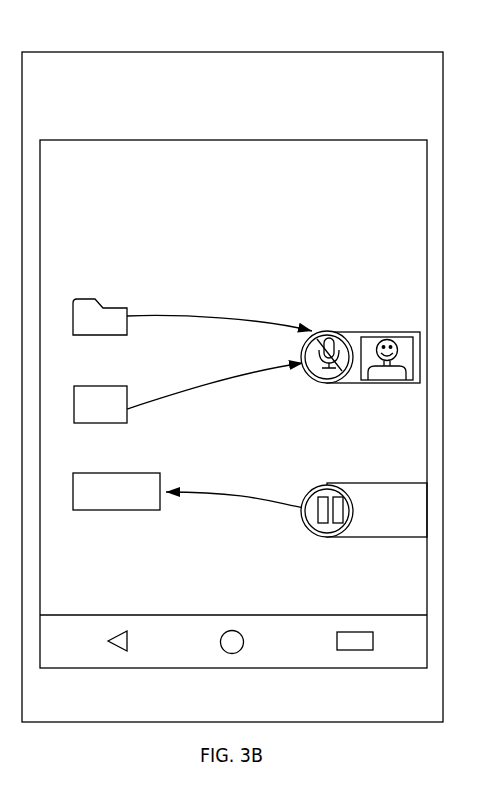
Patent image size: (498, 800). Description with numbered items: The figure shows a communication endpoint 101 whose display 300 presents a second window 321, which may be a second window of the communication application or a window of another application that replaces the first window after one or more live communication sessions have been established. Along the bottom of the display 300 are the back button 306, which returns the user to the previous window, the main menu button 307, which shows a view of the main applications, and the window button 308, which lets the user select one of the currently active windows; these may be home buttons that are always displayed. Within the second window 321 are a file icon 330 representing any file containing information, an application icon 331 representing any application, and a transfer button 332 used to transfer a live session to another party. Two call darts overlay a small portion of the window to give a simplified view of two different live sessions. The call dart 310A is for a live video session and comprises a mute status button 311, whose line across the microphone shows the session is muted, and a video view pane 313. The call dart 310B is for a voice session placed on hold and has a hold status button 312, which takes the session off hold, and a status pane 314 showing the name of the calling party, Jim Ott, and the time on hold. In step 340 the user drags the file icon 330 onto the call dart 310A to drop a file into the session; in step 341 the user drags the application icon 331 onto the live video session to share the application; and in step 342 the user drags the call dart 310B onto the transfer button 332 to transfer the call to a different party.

The communication endpoint 101 is at (232, 52).
The display 300 is at (232, 140).
The second window 321 is at (100, 153).
The file icon 330 is at (112, 307).
The application icon 331 is at (107, 386).
The transfer button 332 is at (130, 473).
The step of dragging the file icon onto the call dart 340 is at (197, 313).
The step of dragging the application icon onto the live session 341 is at (195, 372).
The step of dragging the call dart onto the transfer button 342 is at (233, 492).
The call dart 310A is at (351, 353).
The mute status button 311 is at (345, 376).
The video view pane 313 is at (412, 378).
The call dart 310B is at (348, 507).
The hold status button 312 is at (332, 526).
The status pane 314 is at (393, 528).
The back button 306 is at (117, 630).
The main menu button 307 is at (232, 630).
The window button 308 is at (355, 632).